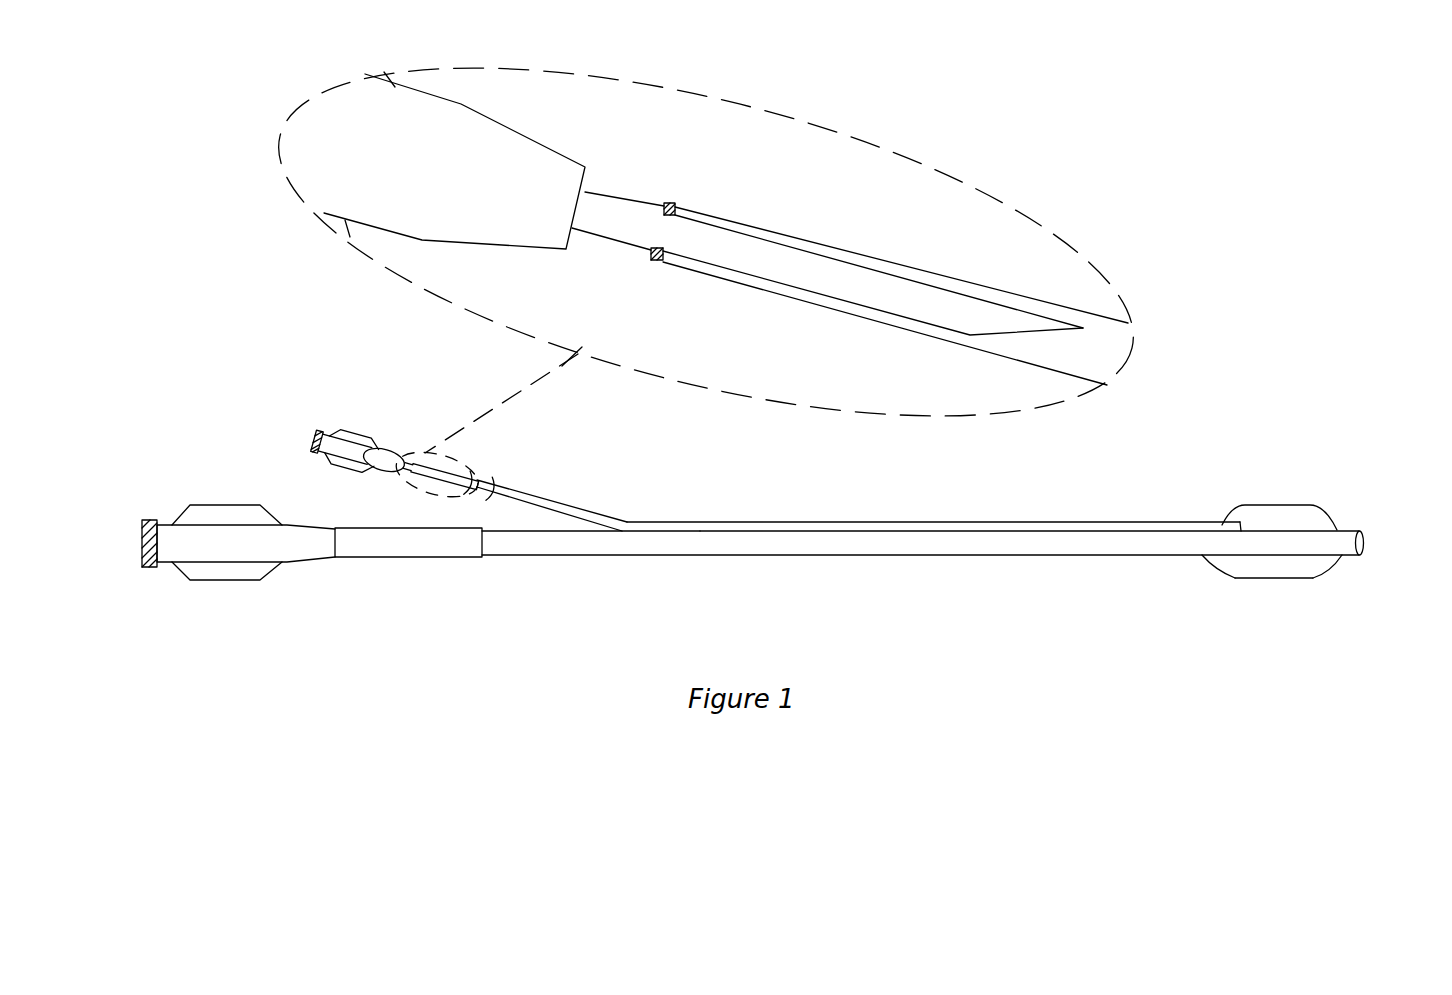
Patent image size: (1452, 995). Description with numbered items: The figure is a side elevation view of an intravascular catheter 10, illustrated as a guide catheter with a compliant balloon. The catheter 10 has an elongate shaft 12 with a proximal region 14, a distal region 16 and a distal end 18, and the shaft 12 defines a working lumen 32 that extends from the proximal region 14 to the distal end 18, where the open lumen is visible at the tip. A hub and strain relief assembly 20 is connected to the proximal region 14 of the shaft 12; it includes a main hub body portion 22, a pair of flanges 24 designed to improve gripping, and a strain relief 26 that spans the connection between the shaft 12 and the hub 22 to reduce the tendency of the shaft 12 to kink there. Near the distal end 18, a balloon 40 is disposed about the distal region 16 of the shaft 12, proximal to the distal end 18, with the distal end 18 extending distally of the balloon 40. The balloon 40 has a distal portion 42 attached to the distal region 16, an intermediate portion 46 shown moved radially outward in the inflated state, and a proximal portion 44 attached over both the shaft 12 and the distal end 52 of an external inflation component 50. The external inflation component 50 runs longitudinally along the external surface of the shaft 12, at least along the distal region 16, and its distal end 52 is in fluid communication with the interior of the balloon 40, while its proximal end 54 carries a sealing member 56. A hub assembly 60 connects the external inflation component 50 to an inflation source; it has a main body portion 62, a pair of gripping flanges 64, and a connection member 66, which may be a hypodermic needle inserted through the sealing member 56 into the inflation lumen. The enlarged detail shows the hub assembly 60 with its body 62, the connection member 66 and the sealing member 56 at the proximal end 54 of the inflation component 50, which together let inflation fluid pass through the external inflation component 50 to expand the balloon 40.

The catheter 10 is at (497, 603).
The elongate shaft 12 is at (757, 557).
The proximal region 14 is at (628, 602).
The distal region 16 is at (1193, 600).
The distal end 18 is at (1360, 530).
The hub and strain relief assembly 20 is at (295, 603).
The main hub body portion 22 is at (172, 540).
The flanges 24 is at (247, 512).
The strain relief 26 is at (403, 550).
The working lumen 32 is at (1364, 543).
The balloon 40 is at (1295, 512).
The distal portion 42 is at (1323, 572).
The proximal portion 44 is at (1218, 565).
The intermediate portion 46 is at (1277, 578).
The external inflation component 50 is at (933, 522).
The distal end 52 is at (1252, 522).
The proximal end 54 is at (478, 493).
The sealing member 56 is at (668, 205).
The hub assembly 60 is at (367, 405).
The main body portion 62 is at (323, 437).
The flanges 64 is at (375, 442).
The connection member 66 is at (621, 237).